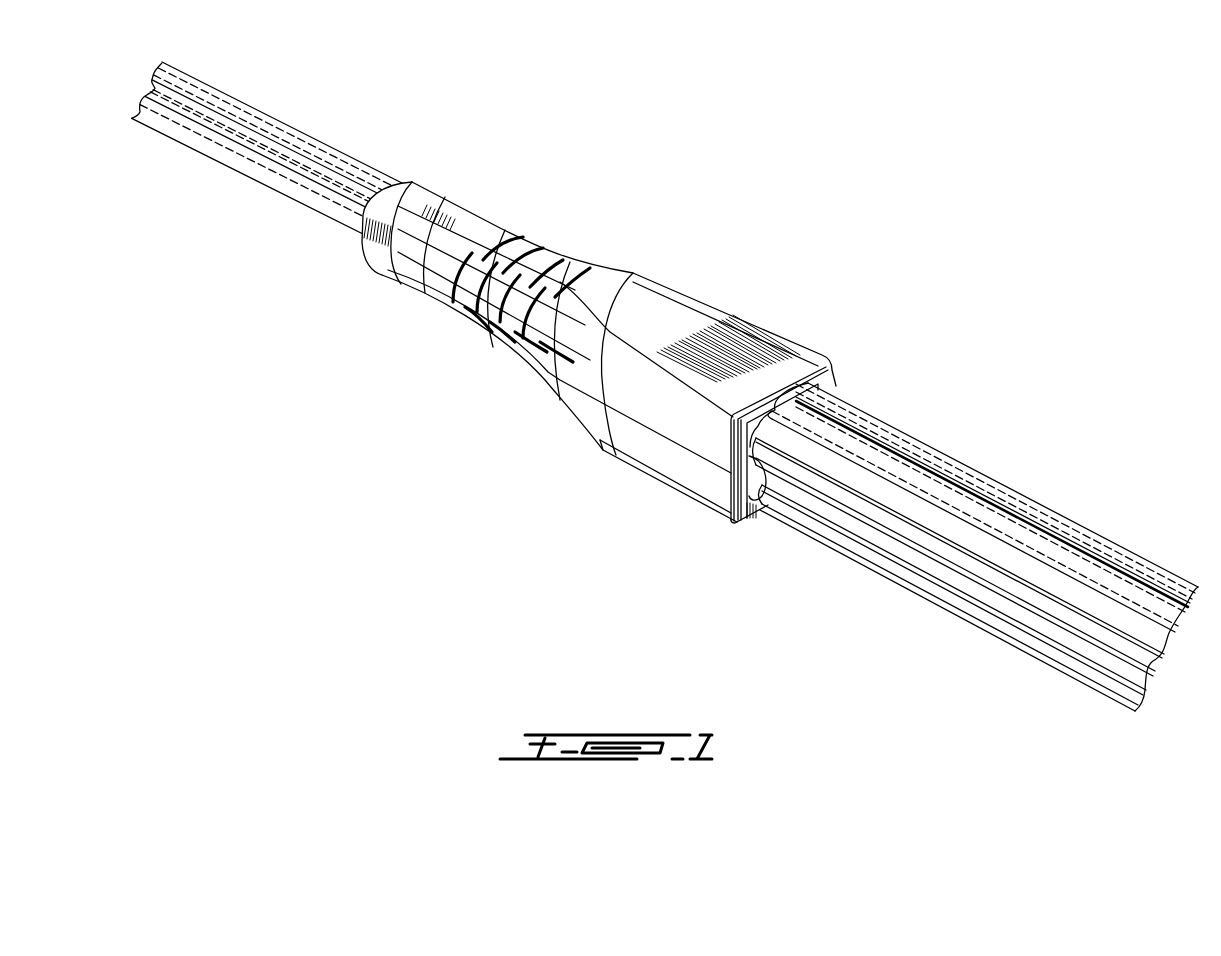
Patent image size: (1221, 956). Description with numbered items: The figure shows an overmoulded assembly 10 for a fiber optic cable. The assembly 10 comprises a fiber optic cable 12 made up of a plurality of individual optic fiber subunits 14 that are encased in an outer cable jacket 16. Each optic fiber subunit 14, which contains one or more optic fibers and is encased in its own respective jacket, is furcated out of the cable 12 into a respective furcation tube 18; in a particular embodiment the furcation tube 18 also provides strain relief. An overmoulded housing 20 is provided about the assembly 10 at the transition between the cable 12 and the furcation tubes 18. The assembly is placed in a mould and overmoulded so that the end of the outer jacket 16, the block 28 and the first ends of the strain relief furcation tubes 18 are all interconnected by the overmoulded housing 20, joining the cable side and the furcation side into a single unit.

The overmoulded assembly 10 is at (808, 266).
The fiber optic cable 12 is at (232, 173).
The optic fiber subunits 14 is at (248, 142).
The outer cable jacket 16 is at (322, 190).
The furcation tube 18 is at (1020, 522).
The overmoulded housing 20 is at (627, 268).
The block 28 is at (755, 468).